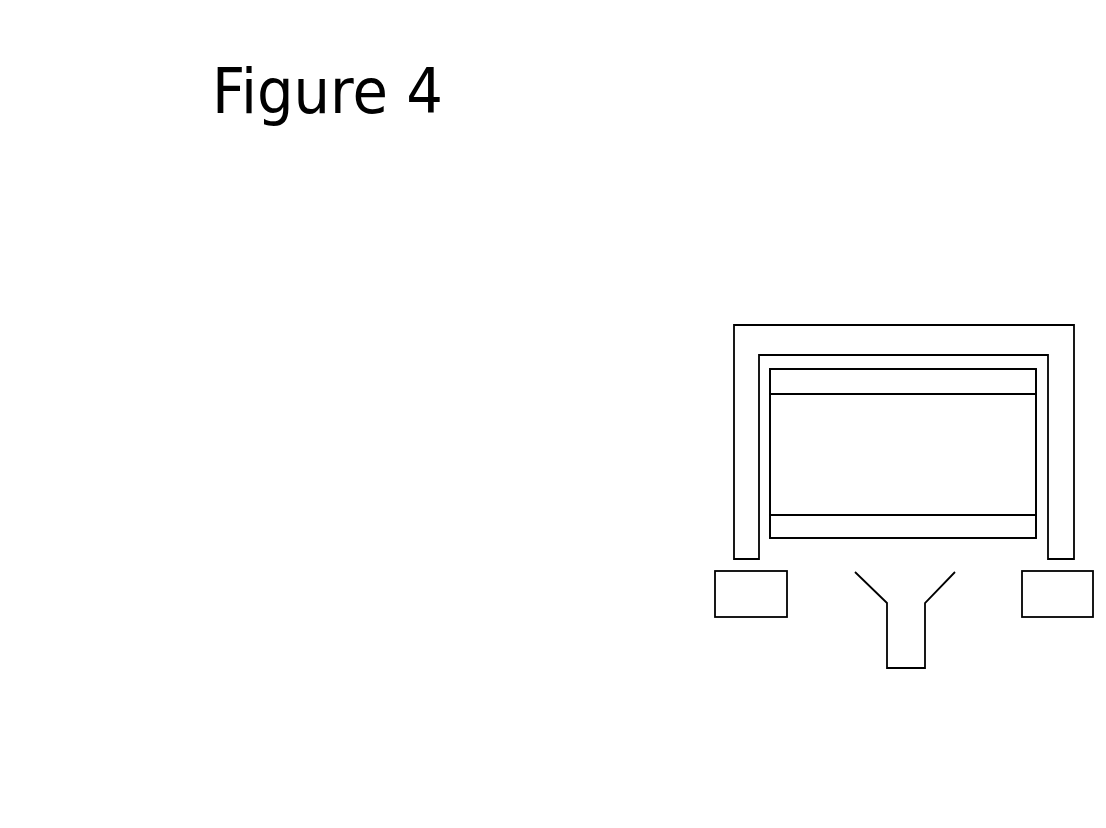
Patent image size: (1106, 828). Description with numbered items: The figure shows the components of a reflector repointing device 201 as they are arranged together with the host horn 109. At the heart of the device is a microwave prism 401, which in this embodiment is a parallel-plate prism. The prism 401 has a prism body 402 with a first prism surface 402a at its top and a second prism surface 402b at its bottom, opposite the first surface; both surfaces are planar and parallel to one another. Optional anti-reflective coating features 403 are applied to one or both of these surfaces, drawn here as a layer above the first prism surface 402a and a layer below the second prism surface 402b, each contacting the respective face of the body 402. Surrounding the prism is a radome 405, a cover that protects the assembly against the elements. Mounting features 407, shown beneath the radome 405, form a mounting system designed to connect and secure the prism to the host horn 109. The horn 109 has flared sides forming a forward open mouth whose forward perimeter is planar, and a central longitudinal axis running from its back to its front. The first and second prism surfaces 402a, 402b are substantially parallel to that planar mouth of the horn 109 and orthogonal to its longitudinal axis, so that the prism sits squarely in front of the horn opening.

The reflector repointing device 201 is at (713, 325).
The radome 405 is at (904, 442).
The prism body 402 is at (802, 478).
The anti-reflective coating features 403 is at (903, 456).
The microwave prism 401 is at (903, 454).
The first prism surface 402a is at (903, 393).
The second prism surface 402b is at (935, 515).
The mounting features 407 is at (751, 594).
The host horn 109 is at (925, 630).